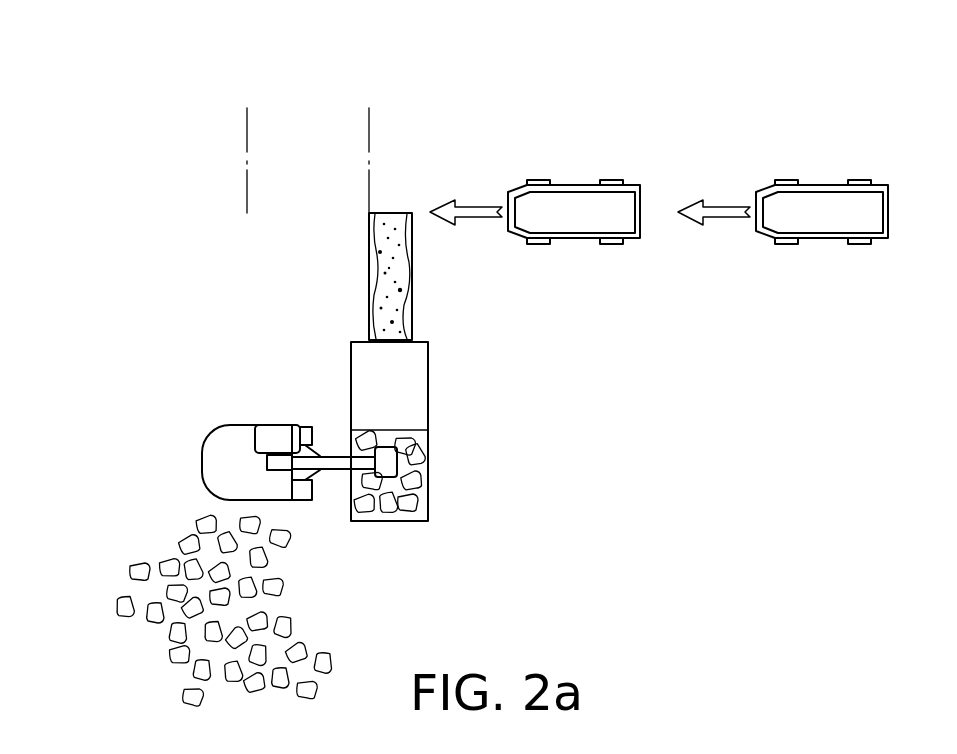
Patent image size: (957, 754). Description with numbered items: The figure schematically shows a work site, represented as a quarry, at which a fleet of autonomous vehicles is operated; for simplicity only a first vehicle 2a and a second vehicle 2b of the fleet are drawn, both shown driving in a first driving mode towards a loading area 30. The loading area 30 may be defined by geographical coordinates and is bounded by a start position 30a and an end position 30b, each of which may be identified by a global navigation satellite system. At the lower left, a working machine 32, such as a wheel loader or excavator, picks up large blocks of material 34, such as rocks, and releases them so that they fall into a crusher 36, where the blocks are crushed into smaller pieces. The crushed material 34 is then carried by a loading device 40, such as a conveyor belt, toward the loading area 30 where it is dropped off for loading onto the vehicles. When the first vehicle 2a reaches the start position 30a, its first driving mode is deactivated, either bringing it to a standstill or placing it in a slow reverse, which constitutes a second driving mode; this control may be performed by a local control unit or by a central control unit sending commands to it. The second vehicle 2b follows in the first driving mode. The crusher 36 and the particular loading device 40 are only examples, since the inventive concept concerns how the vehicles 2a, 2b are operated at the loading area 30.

The loading area 30 is at (244, 69).
The start position 30a is at (369, 130).
The end position 30b is at (247, 130).
The first vehicle 2a is at (578, 185).
The second vehicle 2b is at (825, 185).
The working machine 32 is at (202, 453).
The material 34 is at (388, 277).
The crusher 36 is at (418, 505).
The loading device 40 is at (369, 280).